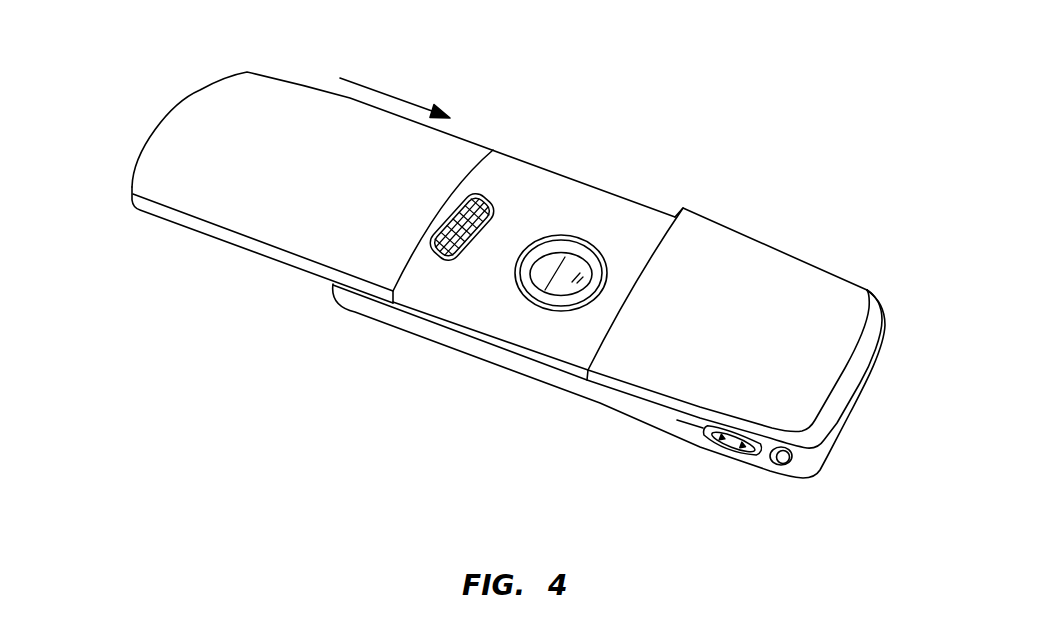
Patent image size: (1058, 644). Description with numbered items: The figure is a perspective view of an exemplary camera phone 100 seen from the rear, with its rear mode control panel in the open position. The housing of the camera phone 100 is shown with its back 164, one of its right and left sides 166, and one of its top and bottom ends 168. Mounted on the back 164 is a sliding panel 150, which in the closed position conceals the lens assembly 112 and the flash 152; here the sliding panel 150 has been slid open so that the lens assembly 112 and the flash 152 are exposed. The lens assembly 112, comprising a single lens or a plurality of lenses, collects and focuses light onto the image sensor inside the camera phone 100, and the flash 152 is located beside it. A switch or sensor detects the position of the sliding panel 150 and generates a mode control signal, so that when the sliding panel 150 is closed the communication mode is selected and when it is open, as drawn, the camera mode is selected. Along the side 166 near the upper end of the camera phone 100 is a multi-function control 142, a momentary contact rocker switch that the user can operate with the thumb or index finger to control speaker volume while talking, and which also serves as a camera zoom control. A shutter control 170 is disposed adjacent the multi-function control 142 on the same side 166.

The camera phone 100 is at (680, 163).
The lens assembly 112 is at (548, 278).
The multi-function control 142 is at (727, 444).
The sliding panel 150 is at (217, 138).
The flash 152 is at (482, 200).
The back 164 is at (790, 273).
The side 166 is at (728, 222).
The end 168 is at (852, 413).
The shutter control 170 is at (783, 465).